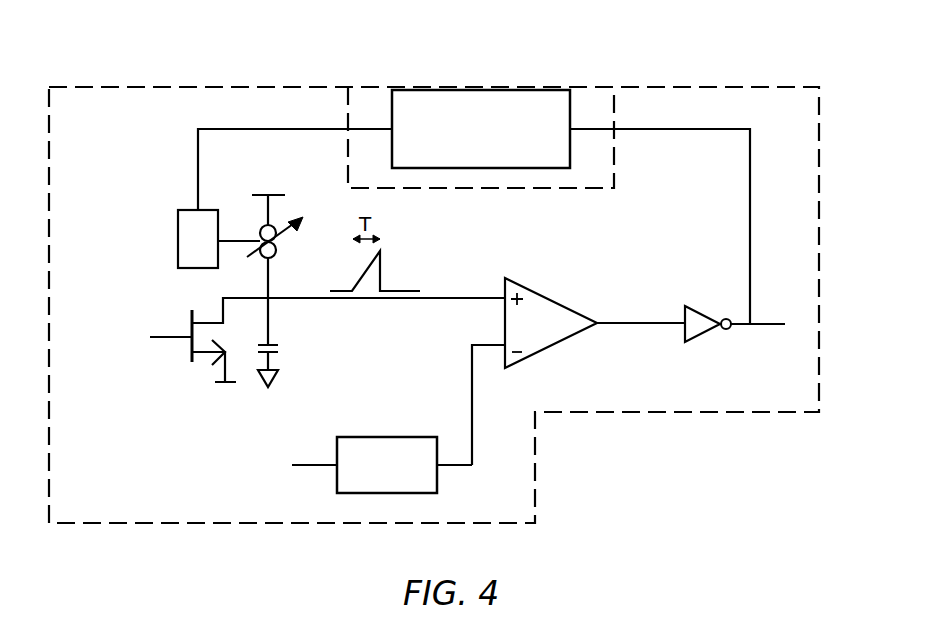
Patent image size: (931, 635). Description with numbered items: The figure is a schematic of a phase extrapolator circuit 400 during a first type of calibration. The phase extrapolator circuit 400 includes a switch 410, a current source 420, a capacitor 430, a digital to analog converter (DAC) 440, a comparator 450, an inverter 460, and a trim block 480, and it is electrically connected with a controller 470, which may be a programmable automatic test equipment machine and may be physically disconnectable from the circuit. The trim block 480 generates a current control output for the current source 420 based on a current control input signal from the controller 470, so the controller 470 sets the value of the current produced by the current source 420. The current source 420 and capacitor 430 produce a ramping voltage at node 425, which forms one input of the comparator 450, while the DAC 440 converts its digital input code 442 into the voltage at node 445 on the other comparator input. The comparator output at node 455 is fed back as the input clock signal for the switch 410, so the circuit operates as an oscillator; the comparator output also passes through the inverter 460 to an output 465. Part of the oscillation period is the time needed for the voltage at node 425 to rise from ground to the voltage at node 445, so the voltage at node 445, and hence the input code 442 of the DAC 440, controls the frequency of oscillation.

The phase extrapolator circuit 400 is at (187, 87).
The switch 410 is at (192, 318).
The current source 420 is at (272, 226).
The node 425 is at (462, 289).
The capacitor 430 is at (276, 345).
The digital to analog converter (DAC) 440 is at (383, 437).
The input code 442 is at (291, 468).
The node 445 is at (479, 393).
The comparator 450 is at (528, 285).
The node 455 is at (393, 323).
The inverter 460 is at (697, 306).
The output 465 is at (768, 310).
The controller 470 is at (510, 90).
The trim block 480 is at (178, 220).